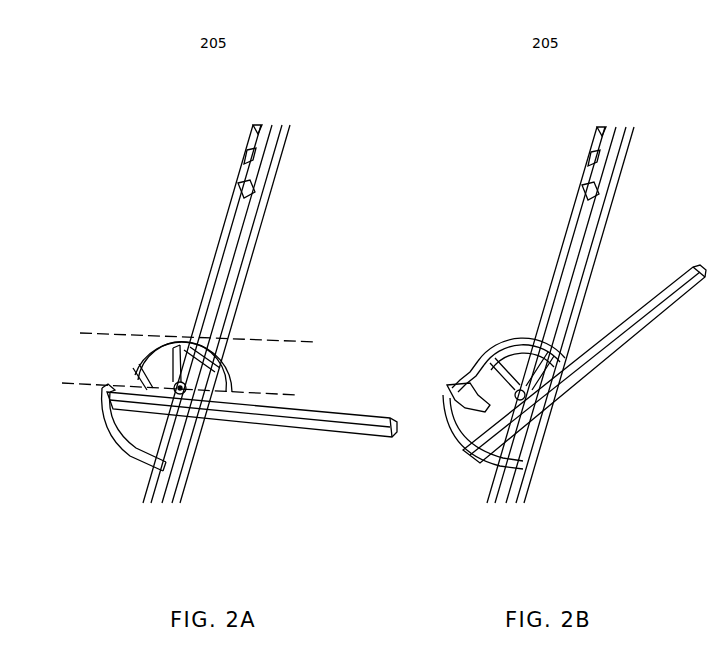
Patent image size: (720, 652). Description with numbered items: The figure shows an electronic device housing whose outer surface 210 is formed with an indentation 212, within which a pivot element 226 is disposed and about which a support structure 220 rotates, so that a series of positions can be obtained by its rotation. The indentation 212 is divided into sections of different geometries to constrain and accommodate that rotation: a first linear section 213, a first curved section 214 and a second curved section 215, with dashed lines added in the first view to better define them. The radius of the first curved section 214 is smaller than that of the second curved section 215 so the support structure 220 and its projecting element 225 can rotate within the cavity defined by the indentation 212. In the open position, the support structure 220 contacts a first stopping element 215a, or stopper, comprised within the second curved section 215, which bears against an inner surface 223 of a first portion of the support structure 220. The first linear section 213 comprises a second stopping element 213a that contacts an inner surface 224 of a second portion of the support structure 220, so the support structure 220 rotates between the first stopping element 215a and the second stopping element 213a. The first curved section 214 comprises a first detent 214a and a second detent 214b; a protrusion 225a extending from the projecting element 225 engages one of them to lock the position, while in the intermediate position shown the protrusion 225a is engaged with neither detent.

In FIG. 2A, the outer surface 210 is at (274, 162).
In FIG. 2B, the outer surface 210 is at (627, 150).
In FIG. 2A, the indentation 212 is at (235, 298).
In FIG. 2A, the first linear section 213 is at (212, 282).
In FIG. 2B, the second stopping element 213a is at (592, 212).
In FIG. 2A, the first curved section 214 is at (130, 365).
In FIG. 2B, the first detent 214a is at (477, 377).
In FIG. 2B, the second detent 214b is at (533, 330).
In FIG. 2A, the second curved section 215 is at (117, 443).
In FIG. 2B, the first stopping element 215a is at (453, 392).
In FIG. 2A, the support structure 220 is at (292, 443).
In FIG. 2B, the support structure 220 is at (618, 360).
In FIG. 2B, the inner surface 223 is at (480, 430).
In FIG. 2B, the inner surface 224 is at (663, 280).
In FIG. 2B, the projecting element 225 is at (577, 330).
In FIG. 2B, the protrusion 225a is at (490, 348).
In FIG. 2A, the pivot element 226 is at (187, 395).